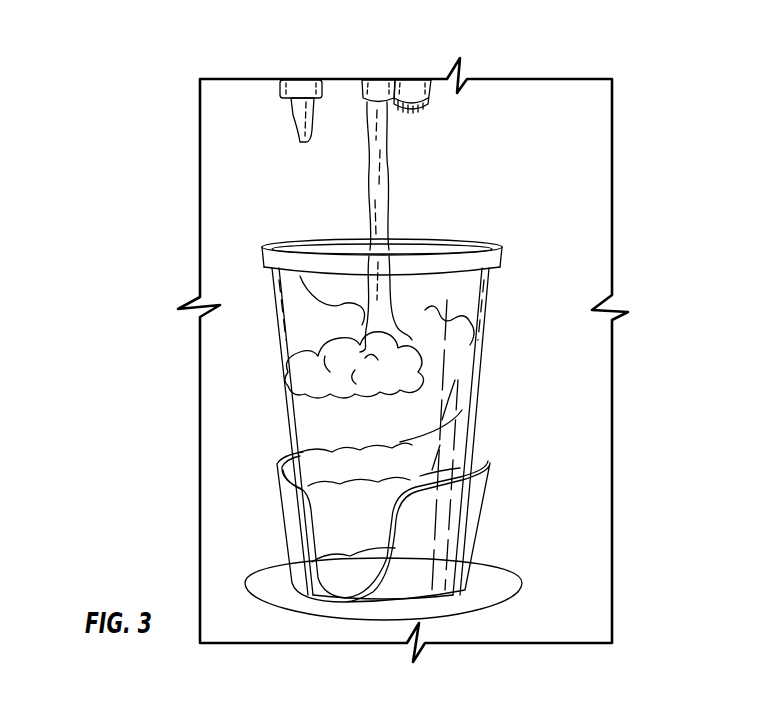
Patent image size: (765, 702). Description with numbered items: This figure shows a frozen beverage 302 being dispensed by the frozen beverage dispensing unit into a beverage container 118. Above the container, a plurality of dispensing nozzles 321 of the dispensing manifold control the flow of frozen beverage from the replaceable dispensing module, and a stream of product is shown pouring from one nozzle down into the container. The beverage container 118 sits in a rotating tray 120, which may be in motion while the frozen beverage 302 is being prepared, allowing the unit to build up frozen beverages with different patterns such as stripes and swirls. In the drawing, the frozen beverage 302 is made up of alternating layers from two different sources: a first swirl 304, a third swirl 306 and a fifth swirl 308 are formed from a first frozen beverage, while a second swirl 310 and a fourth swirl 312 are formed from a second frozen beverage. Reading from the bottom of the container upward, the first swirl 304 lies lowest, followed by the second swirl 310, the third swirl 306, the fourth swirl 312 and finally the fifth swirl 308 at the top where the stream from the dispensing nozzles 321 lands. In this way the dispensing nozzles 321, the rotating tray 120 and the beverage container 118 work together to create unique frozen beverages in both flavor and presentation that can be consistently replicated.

The dispensing nozzles 321 is at (420, 83).
The beverage container 118 is at (283, 393).
The rotating tray 120 is at (290, 545).
The frozen beverage 302 is at (425, 343).
The fifth swirl 308 is at (368, 348).
The fourth swirl 312 is at (405, 405).
The third swirl 306 is at (445, 447).
The second swirl 310 is at (437, 477).
The first swirl 304 is at (362, 574).